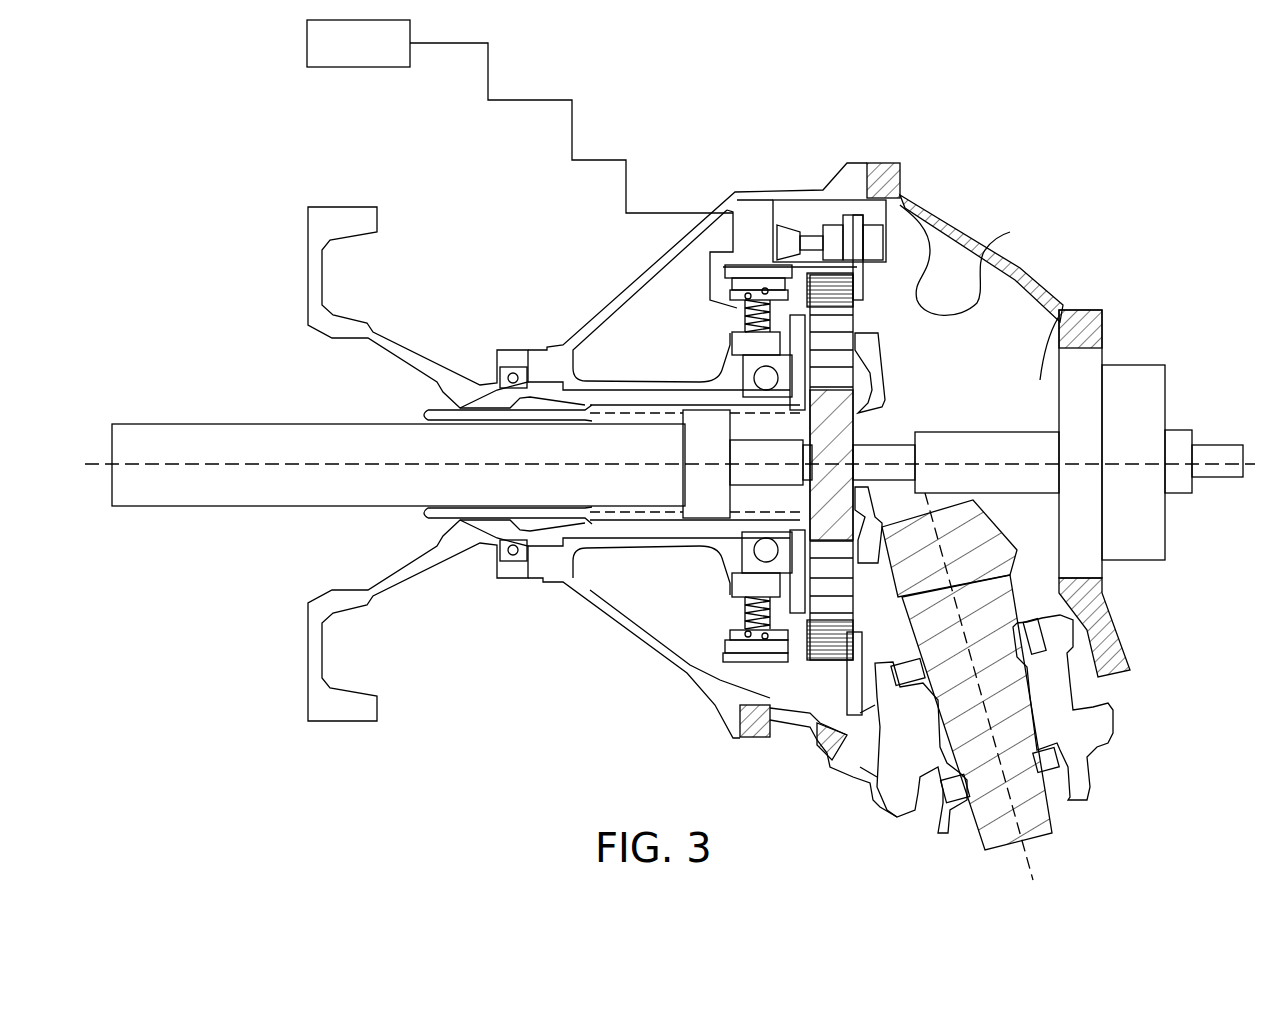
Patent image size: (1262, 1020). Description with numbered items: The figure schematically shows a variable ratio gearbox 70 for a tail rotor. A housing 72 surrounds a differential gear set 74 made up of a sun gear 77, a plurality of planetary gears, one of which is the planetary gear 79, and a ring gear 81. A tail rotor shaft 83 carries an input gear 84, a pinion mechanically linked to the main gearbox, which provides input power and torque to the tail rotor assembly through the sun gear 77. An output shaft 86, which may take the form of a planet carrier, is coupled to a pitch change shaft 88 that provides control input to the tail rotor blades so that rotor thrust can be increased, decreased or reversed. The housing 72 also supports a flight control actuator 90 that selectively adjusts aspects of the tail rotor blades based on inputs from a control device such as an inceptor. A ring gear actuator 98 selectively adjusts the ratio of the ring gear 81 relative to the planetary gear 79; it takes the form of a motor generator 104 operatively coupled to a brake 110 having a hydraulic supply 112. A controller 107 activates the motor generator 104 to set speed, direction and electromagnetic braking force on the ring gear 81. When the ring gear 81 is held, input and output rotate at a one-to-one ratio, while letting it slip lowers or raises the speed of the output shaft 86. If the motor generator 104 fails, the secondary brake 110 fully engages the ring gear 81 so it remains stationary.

The variable ratio gearbox 70 is at (200, 227).
The housing 72 is at (688, 680).
The differential gear set 74 is at (1063, 310).
The sun gear 77 is at (852, 437).
The planetary gear 79 is at (866, 328).
The ring gear 81 is at (852, 272).
The tail rotor shaft 83 is at (1074, 830).
The input gear 84 is at (985, 553).
The output shaft 86 is at (477, 545).
The pitch change shaft 88 is at (172, 512).
The flight control actuator 90 is at (1151, 594).
The ring gear actuator 98 is at (690, 268).
The motor generator 104 is at (743, 317).
The controller 107 is at (306, 60).
The secondary brake 110 is at (792, 217).
The hydraulic supply 112 is at (1030, 336).